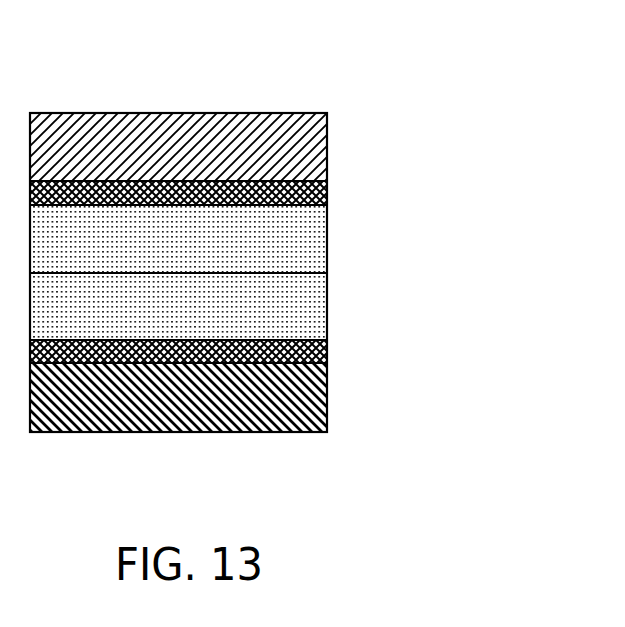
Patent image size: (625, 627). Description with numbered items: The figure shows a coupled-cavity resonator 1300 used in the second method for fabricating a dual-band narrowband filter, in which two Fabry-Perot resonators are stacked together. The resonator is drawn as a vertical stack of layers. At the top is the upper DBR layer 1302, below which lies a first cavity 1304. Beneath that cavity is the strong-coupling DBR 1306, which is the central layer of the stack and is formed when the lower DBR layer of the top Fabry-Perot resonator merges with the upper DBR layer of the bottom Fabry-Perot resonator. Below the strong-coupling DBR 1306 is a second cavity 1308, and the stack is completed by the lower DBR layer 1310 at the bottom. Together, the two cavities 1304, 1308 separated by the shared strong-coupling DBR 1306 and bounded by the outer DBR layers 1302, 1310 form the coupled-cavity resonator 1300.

The coupled-cavity resonator 1300 is at (183, 100).
The upper DBR layer 1302 is at (337, 137).
The cavity 1304 is at (337, 192).
The strong-coupling DBR 1306 is at (350, 227).
The cavity 1308 is at (337, 352).
The lower DBR layer 1310 is at (337, 408).